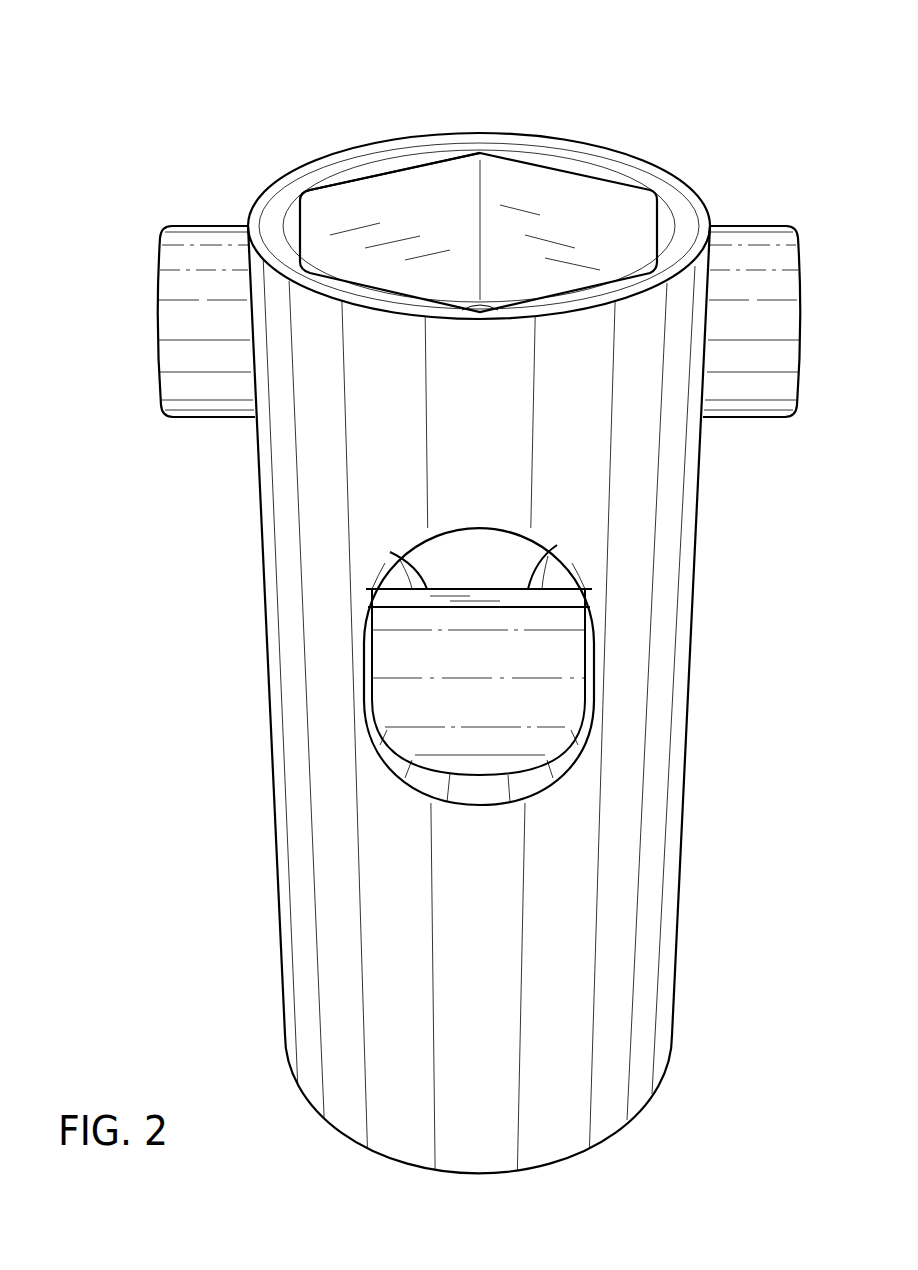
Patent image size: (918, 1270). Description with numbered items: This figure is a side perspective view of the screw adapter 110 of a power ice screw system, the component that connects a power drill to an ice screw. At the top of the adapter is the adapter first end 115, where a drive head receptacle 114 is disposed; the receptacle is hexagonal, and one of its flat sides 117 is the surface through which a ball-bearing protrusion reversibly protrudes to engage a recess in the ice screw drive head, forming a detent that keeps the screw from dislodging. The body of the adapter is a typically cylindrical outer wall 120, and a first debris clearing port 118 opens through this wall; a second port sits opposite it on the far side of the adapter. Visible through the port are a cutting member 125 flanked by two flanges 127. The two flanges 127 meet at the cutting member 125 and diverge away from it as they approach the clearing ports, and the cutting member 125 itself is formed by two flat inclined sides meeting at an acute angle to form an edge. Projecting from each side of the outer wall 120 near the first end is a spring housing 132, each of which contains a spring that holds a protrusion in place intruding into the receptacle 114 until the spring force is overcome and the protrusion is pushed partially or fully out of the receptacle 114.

The screw adapter 110 is at (160, 76).
The drive head receptacle 114 is at (509, 172).
The adapter first end 115 is at (655, 163).
The flat side 117 is at (318, 212).
The first debris clearing port 118 is at (368, 652).
The outer wall 120 is at (498, 439).
The cutting member 125 is at (488, 588).
The flanges 127 is at (496, 666).
The spring housing 132 is at (166, 224).